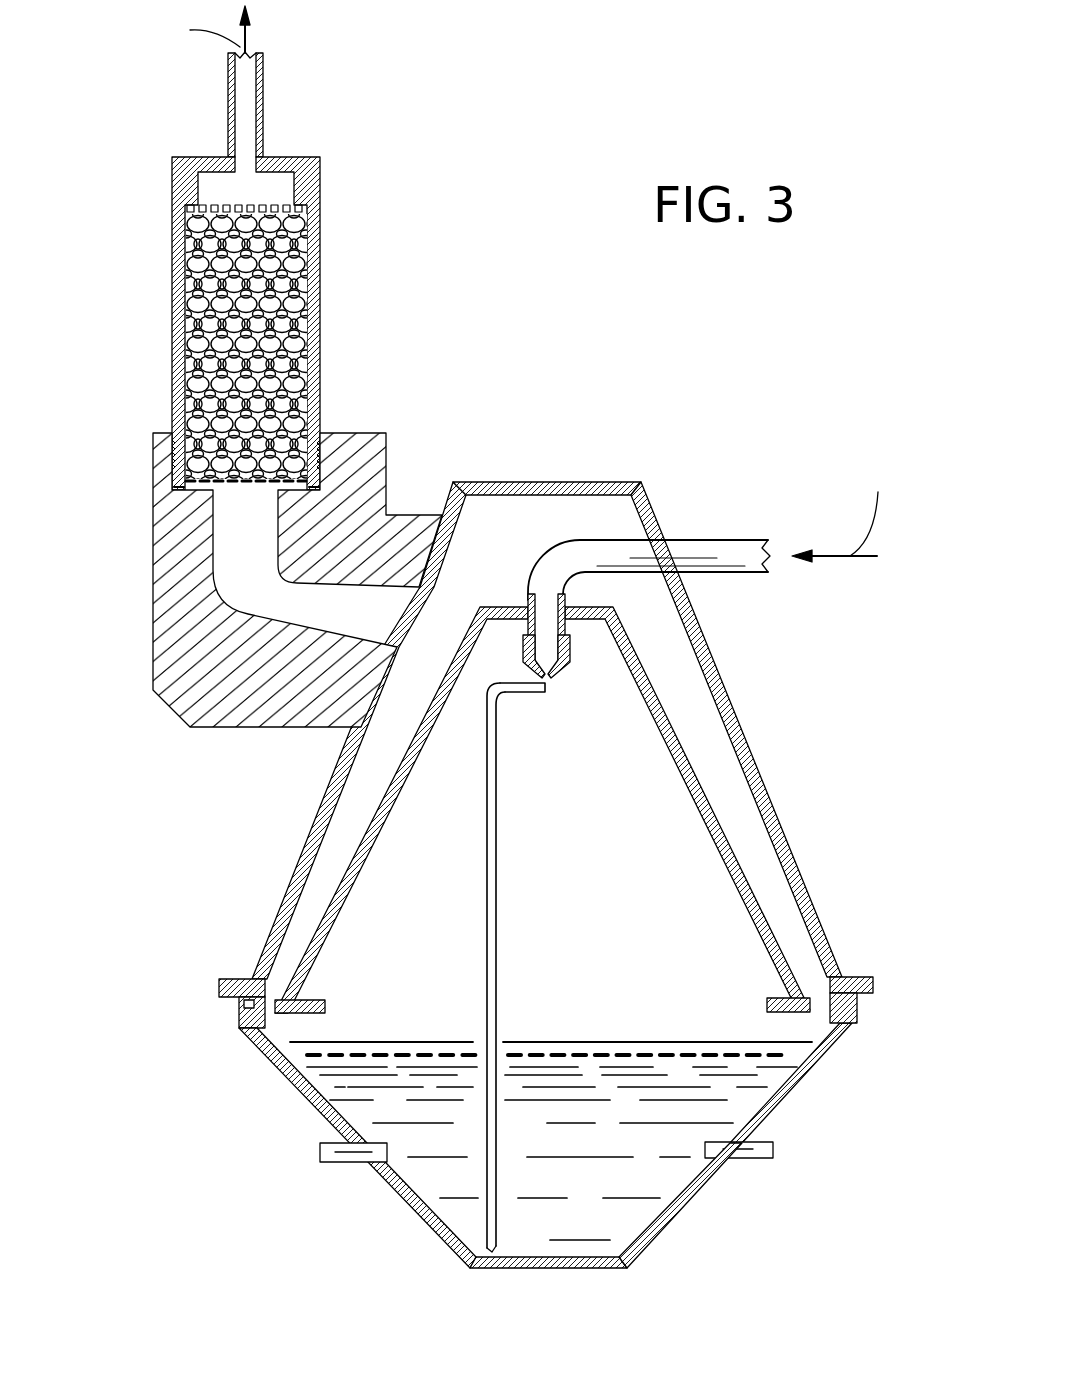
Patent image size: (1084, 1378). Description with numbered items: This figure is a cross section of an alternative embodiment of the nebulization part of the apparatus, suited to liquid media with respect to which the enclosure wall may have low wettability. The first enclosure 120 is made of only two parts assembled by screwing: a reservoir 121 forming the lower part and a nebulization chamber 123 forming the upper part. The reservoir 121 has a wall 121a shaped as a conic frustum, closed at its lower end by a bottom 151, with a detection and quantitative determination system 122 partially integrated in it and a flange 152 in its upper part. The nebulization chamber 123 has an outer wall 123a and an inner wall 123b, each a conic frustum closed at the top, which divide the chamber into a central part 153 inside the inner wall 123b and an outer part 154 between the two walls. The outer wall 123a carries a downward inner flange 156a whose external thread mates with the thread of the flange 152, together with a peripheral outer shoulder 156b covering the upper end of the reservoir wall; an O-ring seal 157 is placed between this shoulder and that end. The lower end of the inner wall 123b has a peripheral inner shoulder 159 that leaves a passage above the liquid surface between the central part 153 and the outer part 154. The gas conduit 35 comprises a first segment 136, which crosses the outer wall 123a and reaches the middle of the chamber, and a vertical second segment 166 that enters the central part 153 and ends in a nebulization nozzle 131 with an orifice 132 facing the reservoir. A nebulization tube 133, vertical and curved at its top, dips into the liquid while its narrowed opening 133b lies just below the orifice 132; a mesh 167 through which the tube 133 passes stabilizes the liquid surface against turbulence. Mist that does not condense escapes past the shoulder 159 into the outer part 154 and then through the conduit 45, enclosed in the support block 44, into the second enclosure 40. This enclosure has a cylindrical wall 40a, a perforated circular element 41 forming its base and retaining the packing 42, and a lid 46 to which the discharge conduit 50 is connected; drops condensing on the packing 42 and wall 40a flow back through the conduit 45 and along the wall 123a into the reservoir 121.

The conduit 35 is at (671, 540).
The second enclosure 40 is at (301, 254).
The cylindrical wall 40a is at (322, 297).
The circular element 41 is at (258, 488).
The packing 42 is at (321, 378).
The support block 44 is at (271, 597).
The conduit 45 is at (243, 543).
The lid 46 is at (295, 290).
The conduit 50 is at (263, 97).
The first enclosure 120 is at (510, 816).
The reservoir 121 is at (755, 1122).
The wall 121a is at (688, 1195).
The detection and quantitative determination system 122 is at (330, 1162).
The nebulization chamber 123 is at (571, 730).
The outer wall 123a is at (780, 831).
The inner wall 123b is at (762, 905).
The nebulization nozzle 131 is at (570, 657).
The orifice 132 is at (546, 677).
The nebulization tube 133 is at (546, 967).
The opening 133b is at (548, 690).
The first segment 136 is at (688, 540).
The bottom 151 is at (490, 1274).
The flange 152 is at (238, 1033).
The central part 153 is at (405, 903).
The outer part 154 is at (360, 807).
The inner flange 156a is at (250, 982).
The peripheral outer shoulder 156b is at (242, 1003).
The O-ring seal 157 is at (240, 1004).
The peripheral inner shoulder 159 is at (777, 1015).
The second segment 166 is at (530, 594).
The mesh 167 is at (597, 1048).